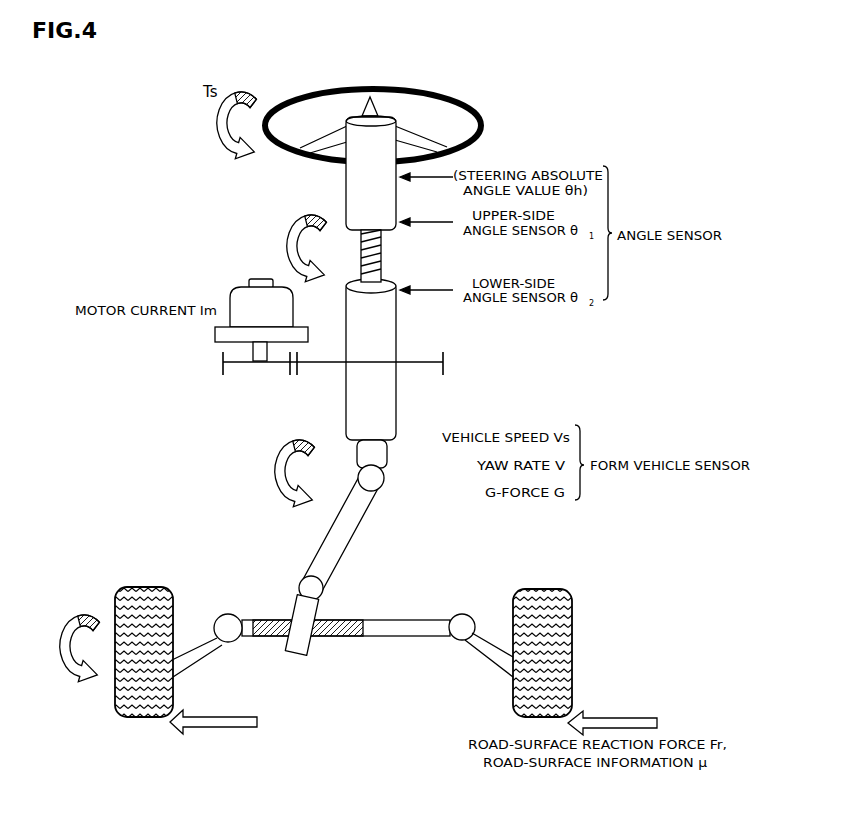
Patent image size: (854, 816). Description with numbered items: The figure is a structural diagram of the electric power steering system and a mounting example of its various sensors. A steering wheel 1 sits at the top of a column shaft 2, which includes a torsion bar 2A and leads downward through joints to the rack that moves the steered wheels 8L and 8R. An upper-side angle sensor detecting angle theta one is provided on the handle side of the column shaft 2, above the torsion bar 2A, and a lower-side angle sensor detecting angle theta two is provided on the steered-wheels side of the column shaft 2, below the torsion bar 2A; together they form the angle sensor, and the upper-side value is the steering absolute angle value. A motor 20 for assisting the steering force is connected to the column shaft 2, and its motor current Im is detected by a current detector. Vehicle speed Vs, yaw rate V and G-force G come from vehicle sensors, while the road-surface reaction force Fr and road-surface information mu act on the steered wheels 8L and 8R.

The steering wheel 1 is at (452, 108).
The column shaft 2 is at (346, 177).
The torsion bar 2A is at (383, 251).
The motor 20 is at (238, 288).
The steered wheel 8L is at (152, 588).
The steered wheel 8R is at (548, 590).